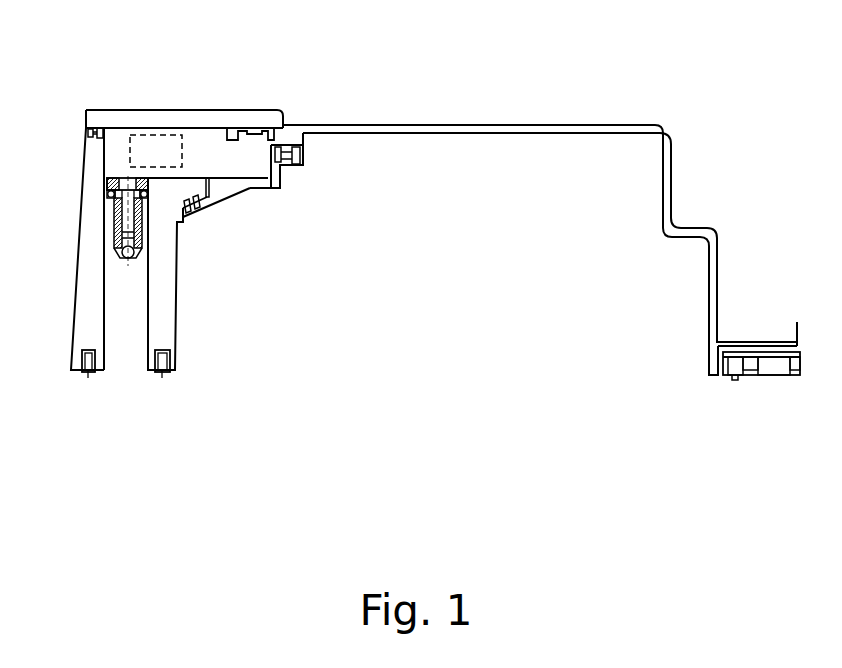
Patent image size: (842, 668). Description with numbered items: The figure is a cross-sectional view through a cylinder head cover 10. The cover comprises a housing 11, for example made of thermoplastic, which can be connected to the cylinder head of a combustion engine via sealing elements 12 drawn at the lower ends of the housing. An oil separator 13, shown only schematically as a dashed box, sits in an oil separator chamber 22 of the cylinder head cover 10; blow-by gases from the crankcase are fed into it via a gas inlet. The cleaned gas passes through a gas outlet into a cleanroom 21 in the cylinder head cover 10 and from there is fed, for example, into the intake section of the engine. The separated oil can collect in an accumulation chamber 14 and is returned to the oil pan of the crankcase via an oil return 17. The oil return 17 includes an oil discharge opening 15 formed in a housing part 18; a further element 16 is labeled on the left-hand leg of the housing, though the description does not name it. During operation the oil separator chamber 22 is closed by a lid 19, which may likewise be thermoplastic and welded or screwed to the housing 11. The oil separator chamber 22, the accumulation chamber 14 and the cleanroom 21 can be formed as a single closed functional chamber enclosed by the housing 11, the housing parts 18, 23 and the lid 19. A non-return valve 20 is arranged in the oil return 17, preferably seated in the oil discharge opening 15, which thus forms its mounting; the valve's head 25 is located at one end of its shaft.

The cylinder head cover 10 is at (366, 338).
The housing 11 is at (548, 125).
The sealing elements 12 is at (88, 376).
The oil separator 13 is at (157, 150).
The accumulation chamber 14 is at (256, 171).
The oil discharge opening 15 is at (116, 212).
The left leg 16 is at (115, 342).
The oil return 17 is at (127, 283).
The housing part 18 is at (168, 220).
The lid 19 is at (190, 118).
The non-return valve 20 is at (113, 220).
The cleanroom 21 is at (203, 142).
The oil separator chamber 22 is at (118, 148).
The housing part 23 is at (217, 193).
The head 25 is at (106, 183).